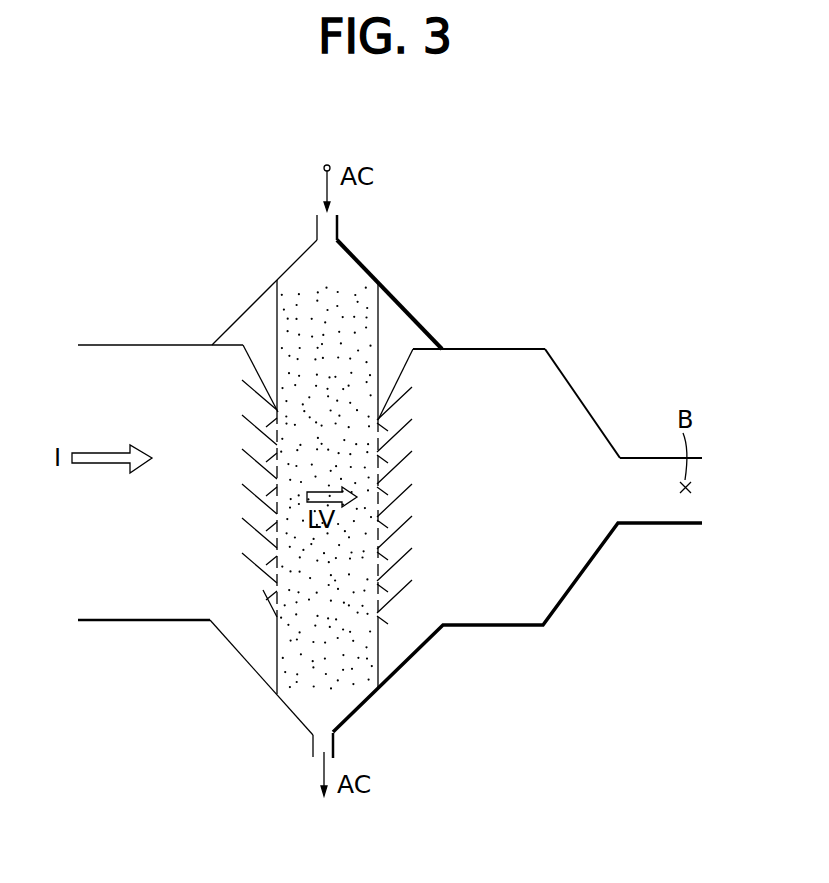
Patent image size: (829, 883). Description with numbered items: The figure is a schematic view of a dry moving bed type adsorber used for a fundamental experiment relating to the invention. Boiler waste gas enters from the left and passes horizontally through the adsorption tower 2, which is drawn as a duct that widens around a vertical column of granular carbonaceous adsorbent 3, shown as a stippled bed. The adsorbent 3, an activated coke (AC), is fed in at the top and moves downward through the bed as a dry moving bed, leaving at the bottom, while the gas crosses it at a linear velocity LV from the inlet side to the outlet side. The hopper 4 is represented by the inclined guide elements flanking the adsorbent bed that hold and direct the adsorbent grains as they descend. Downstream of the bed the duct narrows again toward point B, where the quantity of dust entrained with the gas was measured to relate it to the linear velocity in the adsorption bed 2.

The adsorption tower 2 is at (236, 651).
The granular carbonaceous adsorbent 3 is at (340, 295).
The hopper 4 is at (403, 401).